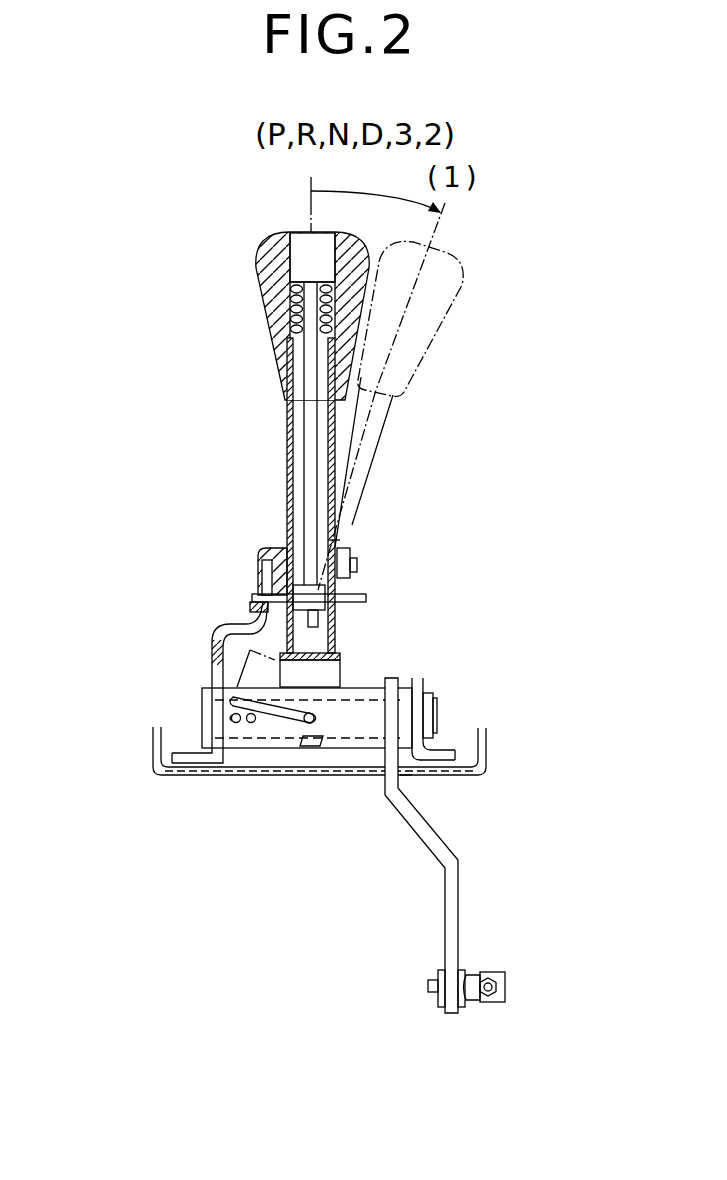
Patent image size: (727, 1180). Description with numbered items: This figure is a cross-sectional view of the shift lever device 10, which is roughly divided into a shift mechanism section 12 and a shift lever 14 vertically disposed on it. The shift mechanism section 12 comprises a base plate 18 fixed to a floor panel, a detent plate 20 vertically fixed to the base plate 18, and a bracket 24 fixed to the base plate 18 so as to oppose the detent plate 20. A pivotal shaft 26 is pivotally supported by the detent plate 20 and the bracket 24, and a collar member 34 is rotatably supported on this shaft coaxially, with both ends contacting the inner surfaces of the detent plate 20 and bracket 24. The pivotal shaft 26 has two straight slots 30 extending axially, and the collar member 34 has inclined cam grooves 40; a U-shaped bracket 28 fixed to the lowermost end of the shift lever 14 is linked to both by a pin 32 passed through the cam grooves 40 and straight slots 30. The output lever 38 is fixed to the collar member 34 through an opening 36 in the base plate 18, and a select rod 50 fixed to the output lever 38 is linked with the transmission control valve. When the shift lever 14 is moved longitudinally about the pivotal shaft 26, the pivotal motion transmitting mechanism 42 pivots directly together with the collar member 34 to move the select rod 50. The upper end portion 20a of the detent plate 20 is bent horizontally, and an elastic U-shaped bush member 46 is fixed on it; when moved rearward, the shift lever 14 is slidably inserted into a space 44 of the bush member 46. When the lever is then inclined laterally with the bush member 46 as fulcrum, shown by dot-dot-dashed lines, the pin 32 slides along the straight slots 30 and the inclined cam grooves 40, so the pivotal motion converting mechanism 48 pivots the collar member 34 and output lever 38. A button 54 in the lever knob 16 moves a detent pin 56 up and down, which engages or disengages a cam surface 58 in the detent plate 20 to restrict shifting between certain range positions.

The shift lever device 10 is at (540, 423).
The shift mechanism section 12 is at (153, 660).
The shift lever 14 is at (337, 404).
The lever knob 16 is at (372, 288).
The base plate 18 is at (192, 776).
The detent plate 20 is at (213, 628).
The upper end portion 20a is at (357, 563).
The bracket 24 is at (423, 678).
The pivotal shaft 26 is at (437, 710).
The U-shaped bracket 28 is at (340, 657).
The straight slots 30 is at (248, 770).
The pin 32 is at (317, 773).
The collar member 34 is at (363, 775).
The opening 36 is at (405, 778).
The output lever 38 is at (458, 887).
The cam grooves 40 is at (297, 773).
The pivotal motion transmitting mechanism 42 is at (328, 713).
The space 44 is at (290, 548).
The bush member 46 is at (340, 540).
The pivotal motion converting mechanism 48 is at (277, 746).
The select rod 50 is at (503, 980).
The button 54 is at (300, 243).
The detent pin 56 is at (366, 598).
The cam surface 58 is at (260, 610).